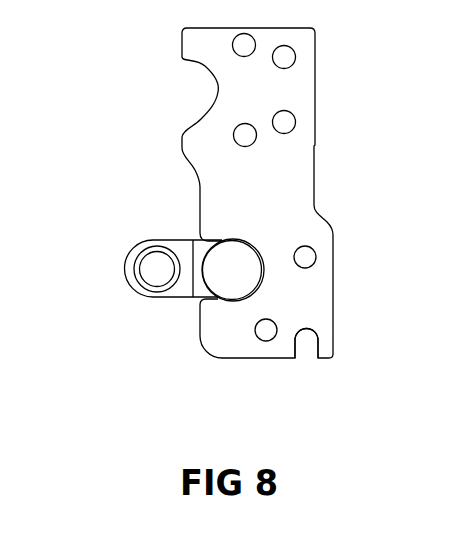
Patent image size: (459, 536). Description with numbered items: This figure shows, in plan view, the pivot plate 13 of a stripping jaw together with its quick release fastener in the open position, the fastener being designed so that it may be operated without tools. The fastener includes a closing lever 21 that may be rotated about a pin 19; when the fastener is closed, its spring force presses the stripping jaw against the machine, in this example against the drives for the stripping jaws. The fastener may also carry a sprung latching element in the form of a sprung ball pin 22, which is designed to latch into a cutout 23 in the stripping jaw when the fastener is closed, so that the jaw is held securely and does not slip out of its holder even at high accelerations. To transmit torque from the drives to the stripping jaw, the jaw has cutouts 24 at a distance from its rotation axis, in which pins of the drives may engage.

The pivot plate 13 is at (302, 90).
The pin 19 is at (222, 259).
The closing lever 21 is at (130, 262).
The sprung ball pin 22 is at (162, 270).
The cutout 23 is at (262, 333).
The cutouts 24 is at (303, 257).